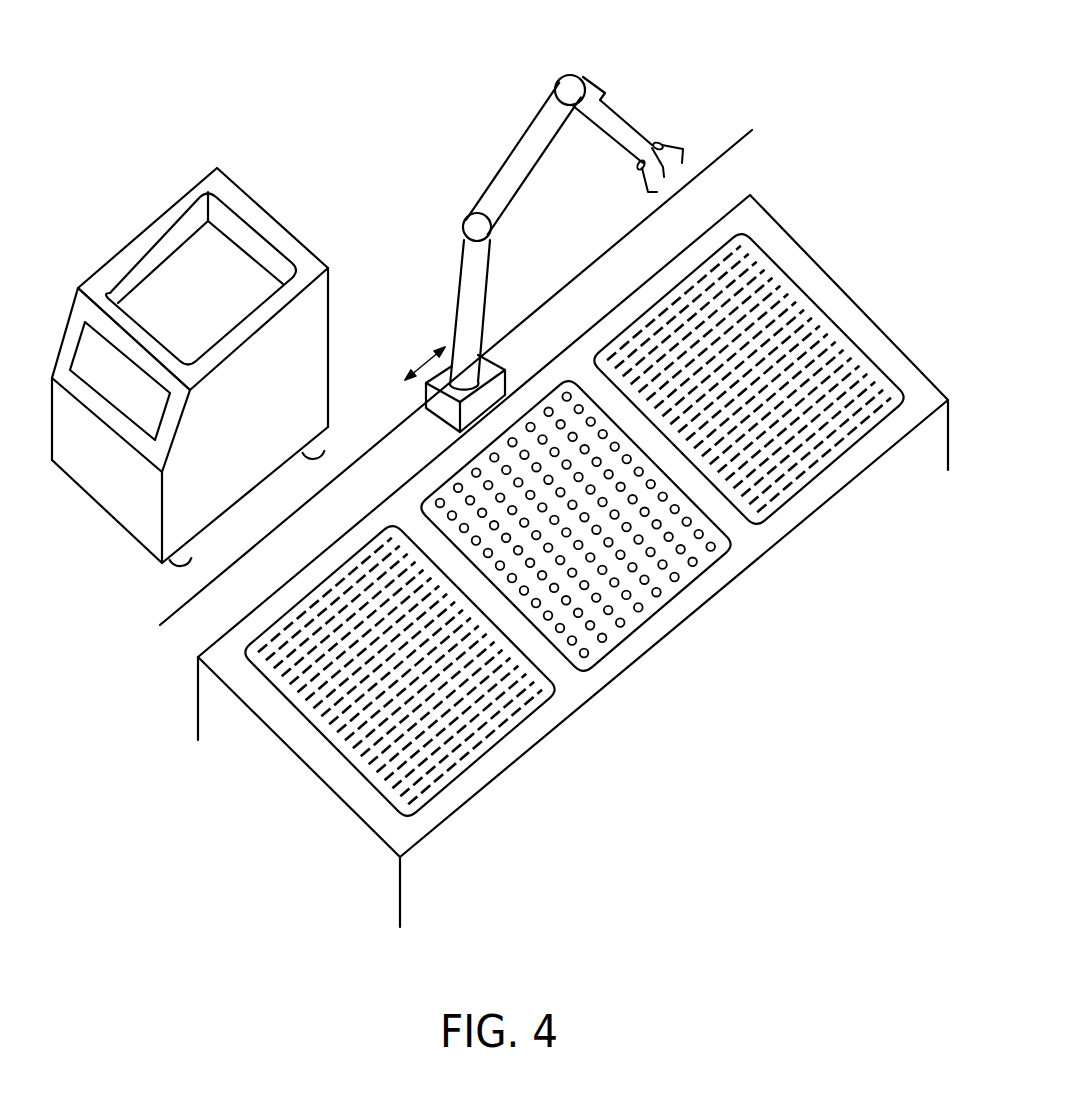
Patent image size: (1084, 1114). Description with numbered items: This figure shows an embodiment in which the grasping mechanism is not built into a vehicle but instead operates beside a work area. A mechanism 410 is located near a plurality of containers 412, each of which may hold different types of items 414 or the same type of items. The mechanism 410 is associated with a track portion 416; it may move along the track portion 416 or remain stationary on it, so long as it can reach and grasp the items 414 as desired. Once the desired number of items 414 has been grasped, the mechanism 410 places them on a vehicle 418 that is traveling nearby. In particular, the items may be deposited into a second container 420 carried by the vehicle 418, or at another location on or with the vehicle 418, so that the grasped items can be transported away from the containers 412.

The mechanism 410 is at (588, 76).
The containers 412 is at (822, 480).
The items 414 is at (822, 337).
The track portion 416 is at (710, 190).
The vehicle 418 is at (273, 424).
The second container 420 is at (219, 307).